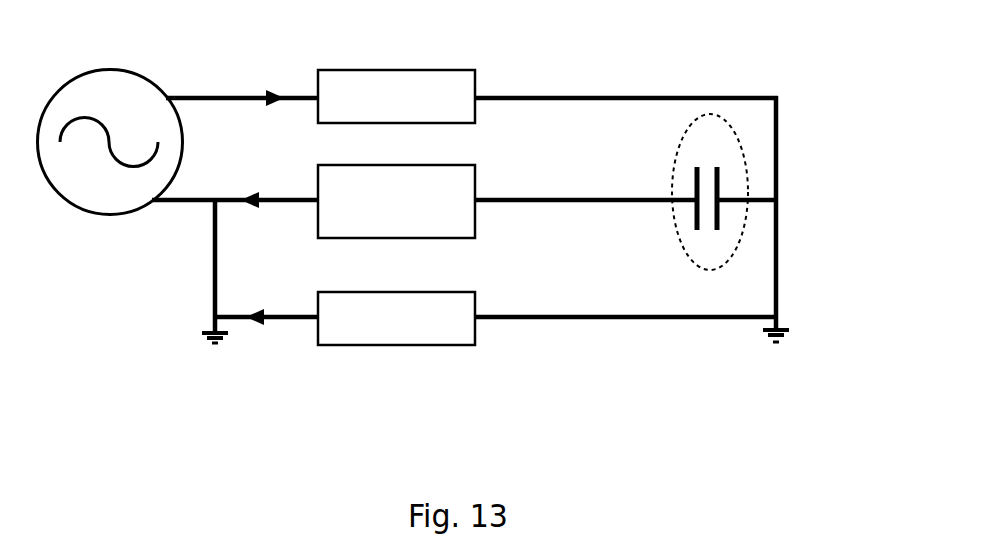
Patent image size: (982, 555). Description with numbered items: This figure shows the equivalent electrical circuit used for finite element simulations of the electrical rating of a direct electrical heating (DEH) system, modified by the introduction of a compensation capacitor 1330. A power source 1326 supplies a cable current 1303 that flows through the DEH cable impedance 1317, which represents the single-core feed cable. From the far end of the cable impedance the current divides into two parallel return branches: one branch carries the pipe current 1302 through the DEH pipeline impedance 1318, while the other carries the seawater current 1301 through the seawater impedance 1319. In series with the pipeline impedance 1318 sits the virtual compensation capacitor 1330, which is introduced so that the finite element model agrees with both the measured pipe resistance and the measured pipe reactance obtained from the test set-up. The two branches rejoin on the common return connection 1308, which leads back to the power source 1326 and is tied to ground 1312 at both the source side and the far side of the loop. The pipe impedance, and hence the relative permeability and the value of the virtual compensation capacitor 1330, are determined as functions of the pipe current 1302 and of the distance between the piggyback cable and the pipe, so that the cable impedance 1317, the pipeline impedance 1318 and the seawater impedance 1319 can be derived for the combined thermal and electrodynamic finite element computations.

The power source 1326 is at (110, 123).
The DEH cable current 1303 is at (242, 75).
The DEH cable impedance 1317 is at (396, 74).
The DEH pipeline/flowline impedance 1318 is at (396, 183).
The seawater impedance 1319 is at (396, 343).
The pipe current 1302 is at (235, 188).
The seawater current 1301 is at (266, 304).
The return connection 1308 is at (507, 214).
The ground 1312 is at (454, 351).
The compensation capacitor 1330 is at (540, 395).